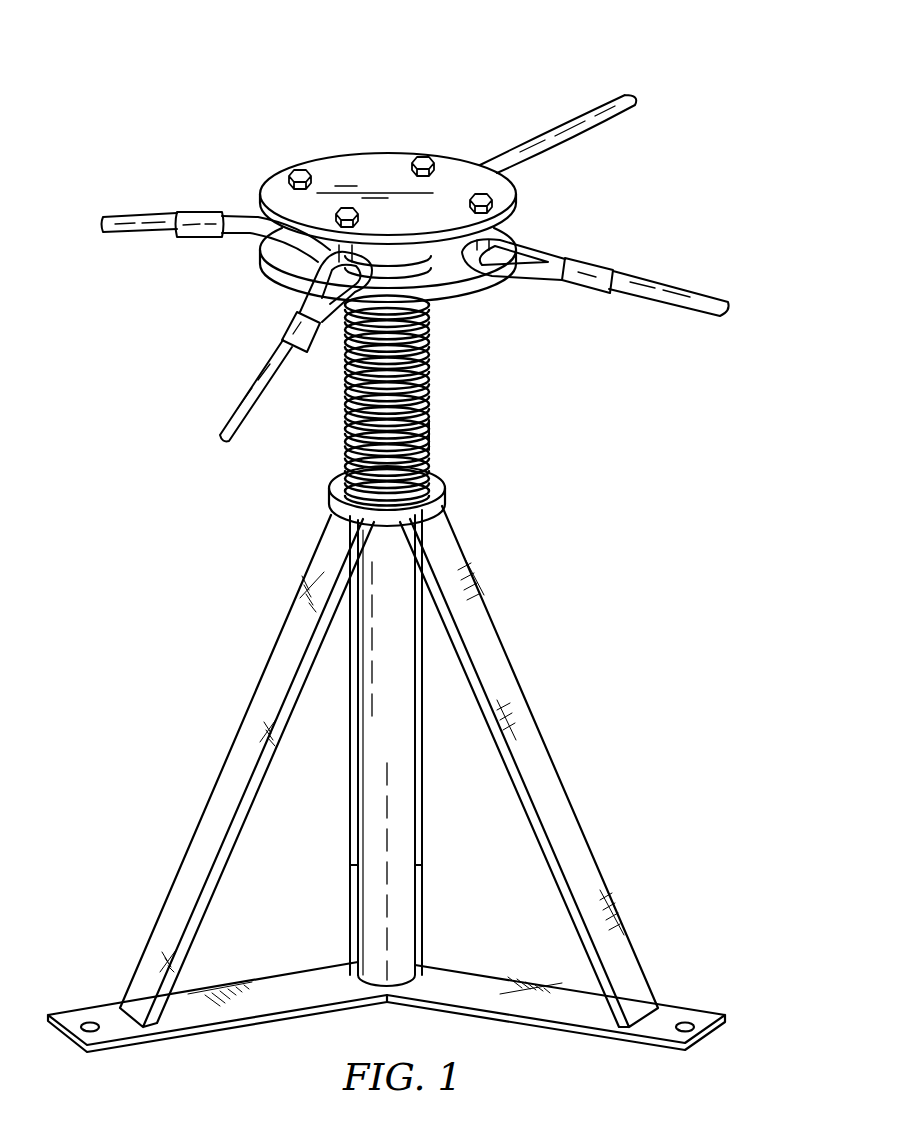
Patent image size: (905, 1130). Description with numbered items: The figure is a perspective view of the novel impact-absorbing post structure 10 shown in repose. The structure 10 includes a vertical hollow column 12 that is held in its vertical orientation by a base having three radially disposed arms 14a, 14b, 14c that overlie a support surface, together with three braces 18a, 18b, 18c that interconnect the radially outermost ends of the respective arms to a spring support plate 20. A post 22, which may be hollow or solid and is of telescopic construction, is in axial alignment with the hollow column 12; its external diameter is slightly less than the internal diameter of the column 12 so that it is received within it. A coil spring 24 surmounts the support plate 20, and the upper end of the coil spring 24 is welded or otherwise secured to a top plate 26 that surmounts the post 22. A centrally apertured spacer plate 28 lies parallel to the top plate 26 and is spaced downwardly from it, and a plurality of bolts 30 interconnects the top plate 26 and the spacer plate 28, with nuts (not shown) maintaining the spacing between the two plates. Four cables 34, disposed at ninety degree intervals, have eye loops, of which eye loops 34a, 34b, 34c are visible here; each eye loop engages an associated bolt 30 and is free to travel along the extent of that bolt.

The impact-absorbing post structure 10 is at (666, 64).
The vertical hollow column 12 is at (378, 820).
The radially disposed arm 14a is at (314, 967).
The radially disposed arm 14b is at (355, 902).
The radially disposed arm 14c is at (470, 968).
The brace 18a is at (225, 760).
The brace 18b is at (424, 740).
The brace 18c is at (550, 760).
The spring support plate 20 is at (436, 492).
The post 22 is at (414, 370).
The coil spring 24 is at (433, 436).
The top plate 26 is at (372, 160).
The spacer plate 28 is at (272, 265).
The bolts 30 is at (300, 172).
The cables 34 is at (140, 218).
The eye loop 34a is at (246, 233).
The eye loop 34b is at (306, 298).
The eye loop 34c is at (530, 245).